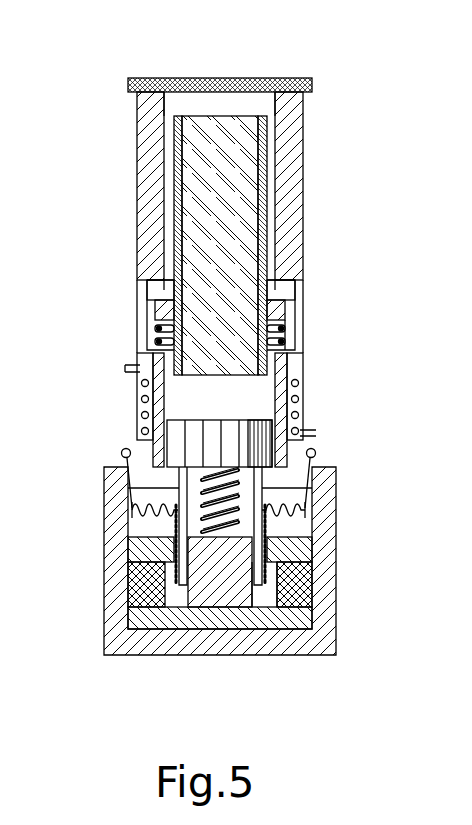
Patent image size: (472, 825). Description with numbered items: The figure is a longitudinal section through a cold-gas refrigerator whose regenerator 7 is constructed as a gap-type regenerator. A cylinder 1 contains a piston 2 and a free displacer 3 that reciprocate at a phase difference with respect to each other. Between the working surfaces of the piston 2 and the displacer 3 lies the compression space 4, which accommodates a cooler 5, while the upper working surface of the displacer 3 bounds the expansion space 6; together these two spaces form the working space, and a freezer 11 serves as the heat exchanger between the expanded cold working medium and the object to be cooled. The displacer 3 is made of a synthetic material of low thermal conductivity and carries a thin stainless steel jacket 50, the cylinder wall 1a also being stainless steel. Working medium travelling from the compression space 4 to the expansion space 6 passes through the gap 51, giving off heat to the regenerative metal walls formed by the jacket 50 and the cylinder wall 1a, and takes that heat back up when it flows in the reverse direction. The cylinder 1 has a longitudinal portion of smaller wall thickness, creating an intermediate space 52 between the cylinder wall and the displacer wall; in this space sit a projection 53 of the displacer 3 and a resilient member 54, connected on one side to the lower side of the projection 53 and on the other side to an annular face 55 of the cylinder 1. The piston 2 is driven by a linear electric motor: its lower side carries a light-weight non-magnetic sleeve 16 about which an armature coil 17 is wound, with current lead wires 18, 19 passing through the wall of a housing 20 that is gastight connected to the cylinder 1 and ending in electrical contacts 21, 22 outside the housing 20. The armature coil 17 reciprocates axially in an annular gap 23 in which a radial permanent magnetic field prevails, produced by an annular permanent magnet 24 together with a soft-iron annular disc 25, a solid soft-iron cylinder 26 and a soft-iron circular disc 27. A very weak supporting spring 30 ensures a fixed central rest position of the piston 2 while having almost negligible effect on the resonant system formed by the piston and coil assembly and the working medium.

The freezer 11 is at (220, 88).
The expansion space 6 is at (256, 105).
The gap 51 is at (173, 132).
The stainless steel jacket 50 is at (262, 162).
The regenerator 7 is at (158, 193).
The cylinder wall 1a is at (276, 200).
The free displacer 3 is at (256, 228).
The intermediate space 52 is at (158, 290).
The cylinder 1 is at (140, 307).
The projection 53 is at (165, 310).
The resilient member 54 is at (160, 335).
The annular face 55 is at (288, 345).
The cooler 5 is at (143, 383).
The compression space 4 is at (220, 398).
The piston 2 is at (243, 435).
The electrical contact 21 is at (121, 452).
The electrical contact 22 is at (316, 452).
The sleeve 16 is at (179, 480).
The supporting spring 30 is at (234, 486).
The current lead wire 18 is at (135, 513).
The current lead wire 19 is at (306, 510).
The armature coil 17 is at (180, 527).
The soft-iron annular disc 25 is at (295, 548).
The housing 20 is at (128, 565).
The annular permanent magnet 24 is at (297, 575).
The annular gap 23 is at (298, 588).
The soft-iron circular disc 27 is at (186, 617).
The solid soft-iron cylinder 26 is at (238, 585).